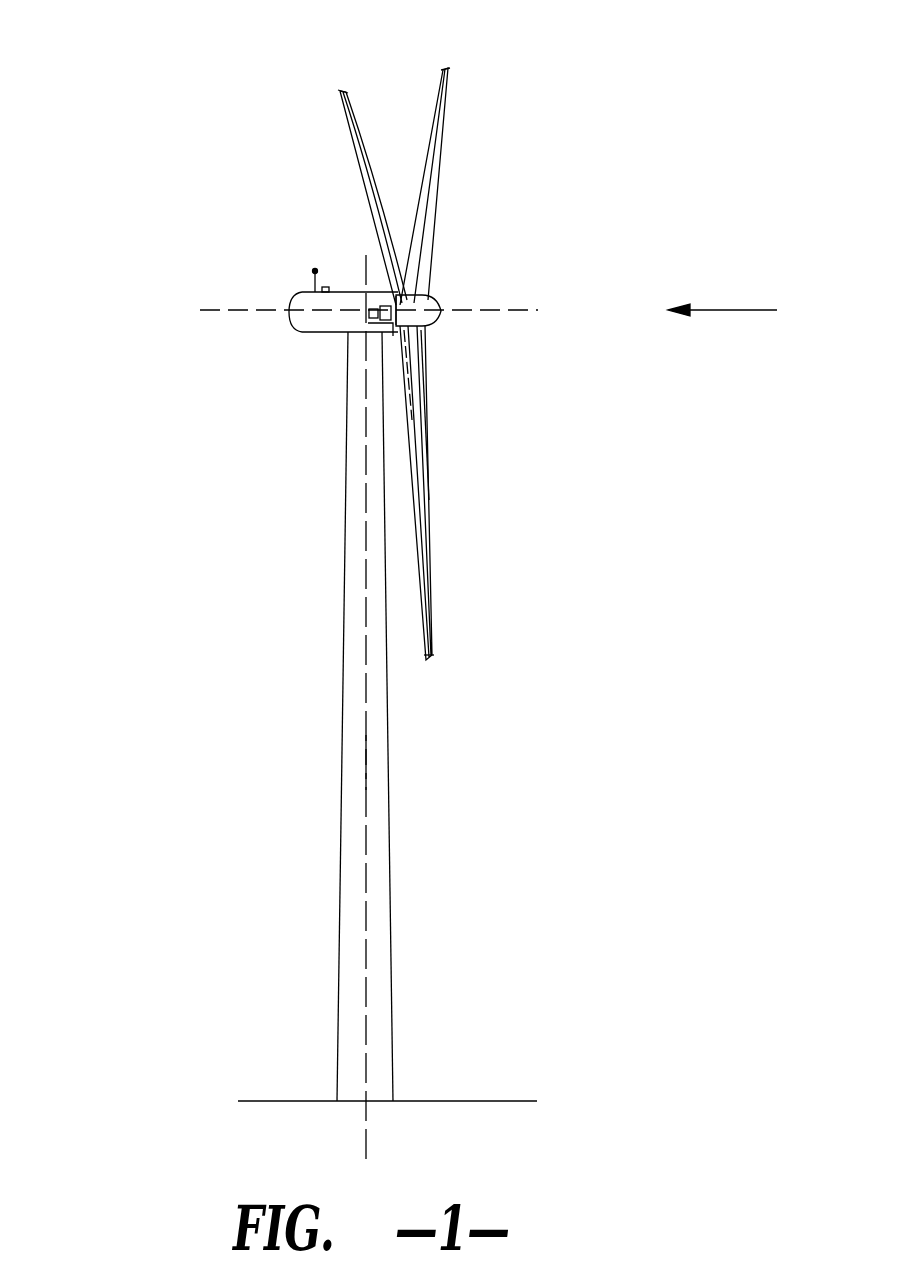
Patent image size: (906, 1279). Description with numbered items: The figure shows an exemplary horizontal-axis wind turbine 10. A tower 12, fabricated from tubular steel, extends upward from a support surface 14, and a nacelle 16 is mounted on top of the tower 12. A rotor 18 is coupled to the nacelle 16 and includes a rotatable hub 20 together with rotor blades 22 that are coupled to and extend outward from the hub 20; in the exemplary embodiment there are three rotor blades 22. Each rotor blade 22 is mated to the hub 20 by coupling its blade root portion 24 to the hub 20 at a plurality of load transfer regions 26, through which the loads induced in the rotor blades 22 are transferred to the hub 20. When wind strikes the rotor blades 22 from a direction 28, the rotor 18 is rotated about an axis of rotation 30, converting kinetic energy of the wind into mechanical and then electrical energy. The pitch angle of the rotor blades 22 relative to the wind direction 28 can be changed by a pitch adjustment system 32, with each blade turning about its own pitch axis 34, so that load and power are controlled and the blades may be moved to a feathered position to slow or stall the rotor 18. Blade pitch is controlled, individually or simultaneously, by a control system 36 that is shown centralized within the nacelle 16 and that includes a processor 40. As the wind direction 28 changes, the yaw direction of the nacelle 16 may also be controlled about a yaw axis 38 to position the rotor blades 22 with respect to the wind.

The wind turbine 10 is at (121, 92).
The tower 12 is at (342, 870).
The support surface 14 is at (297, 1100).
The nacelle 16 is at (318, 332).
The rotor 18 is at (452, 210).
The rotatable hub 20 is at (437, 304).
The rotor blade 22 is at (364, 160).
The blade root portion 24 is at (425, 410).
The load transfer regions 26 is at (428, 332).
The direction 28 is at (735, 308).
The axis of rotation 30 is at (508, 318).
The pitch adjustment system 32 is at (426, 368).
The pitch axes 34 is at (343, 88).
The control system 36 is at (372, 340).
The yaw axis 38 is at (366, 760).
The processor 40 is at (372, 258).